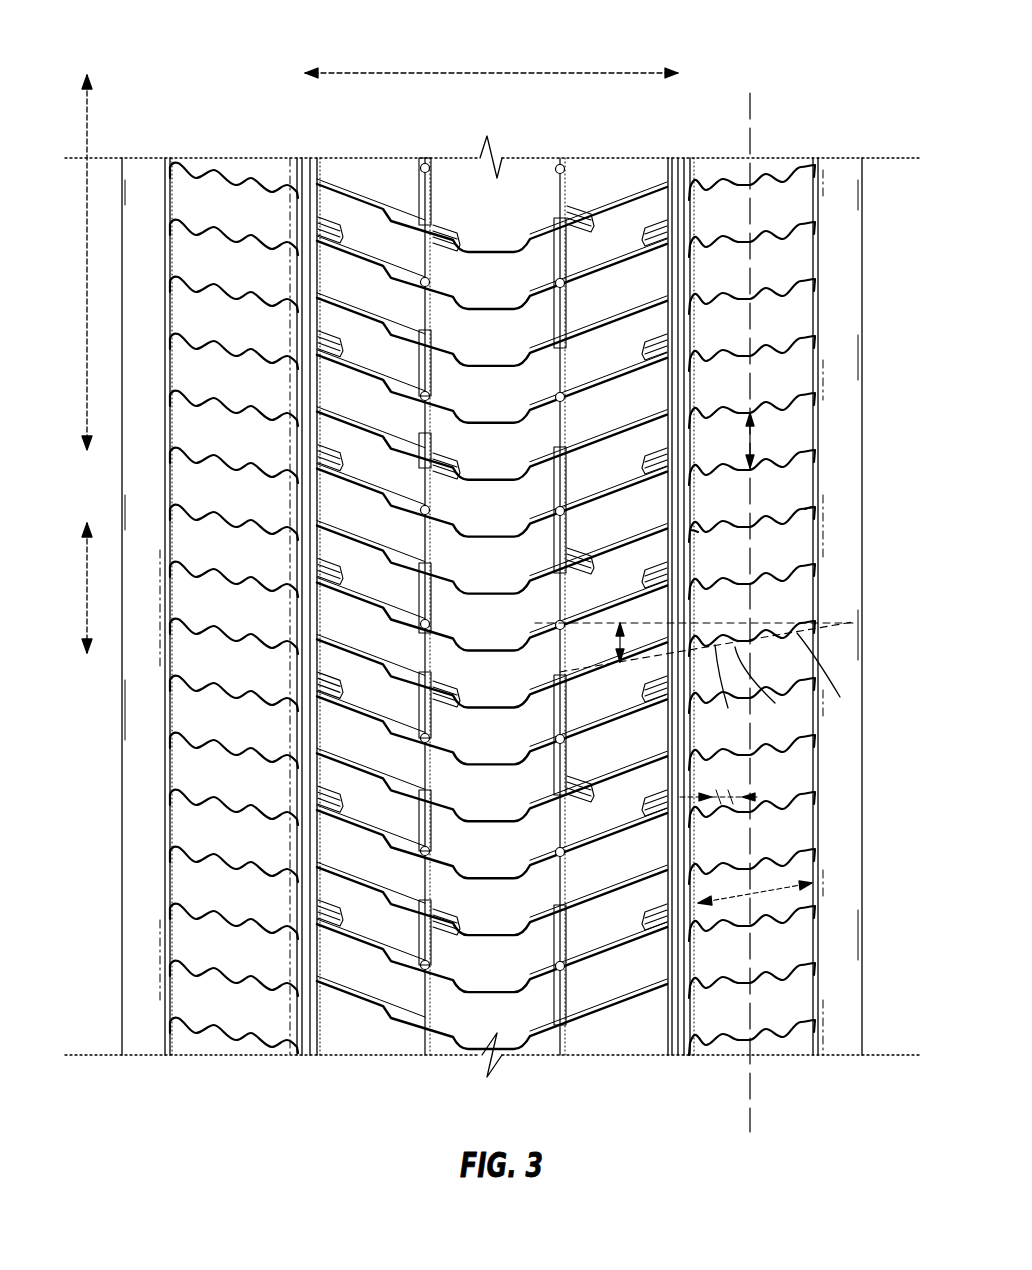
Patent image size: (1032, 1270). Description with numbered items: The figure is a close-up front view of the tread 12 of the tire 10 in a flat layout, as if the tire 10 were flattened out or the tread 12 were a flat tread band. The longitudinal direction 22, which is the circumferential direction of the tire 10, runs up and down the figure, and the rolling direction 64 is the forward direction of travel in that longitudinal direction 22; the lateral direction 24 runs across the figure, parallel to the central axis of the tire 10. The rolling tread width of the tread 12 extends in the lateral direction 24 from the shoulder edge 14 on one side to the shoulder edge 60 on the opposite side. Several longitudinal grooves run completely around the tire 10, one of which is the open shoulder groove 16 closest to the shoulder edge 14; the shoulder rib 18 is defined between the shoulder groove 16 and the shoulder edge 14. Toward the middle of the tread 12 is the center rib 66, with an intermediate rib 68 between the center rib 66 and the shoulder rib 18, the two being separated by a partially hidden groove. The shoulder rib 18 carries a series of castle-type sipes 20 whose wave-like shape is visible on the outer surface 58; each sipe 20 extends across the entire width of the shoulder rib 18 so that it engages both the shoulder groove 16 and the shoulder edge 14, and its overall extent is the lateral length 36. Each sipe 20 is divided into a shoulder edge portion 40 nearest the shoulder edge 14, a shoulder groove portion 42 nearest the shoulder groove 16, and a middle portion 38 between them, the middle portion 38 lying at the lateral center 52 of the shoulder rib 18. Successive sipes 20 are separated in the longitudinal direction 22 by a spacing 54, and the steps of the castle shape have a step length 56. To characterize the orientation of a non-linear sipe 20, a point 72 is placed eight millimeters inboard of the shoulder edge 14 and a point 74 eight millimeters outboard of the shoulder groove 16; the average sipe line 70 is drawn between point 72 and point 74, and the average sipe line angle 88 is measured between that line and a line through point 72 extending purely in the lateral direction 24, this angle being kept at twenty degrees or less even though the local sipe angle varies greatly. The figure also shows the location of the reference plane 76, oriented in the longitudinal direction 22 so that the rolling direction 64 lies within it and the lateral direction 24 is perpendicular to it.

The tire 10 is at (812, 66).
The tread 12 is at (775, 183).
The shoulder edge 14 is at (822, 378).
The shoulder groove 16 is at (687, 213).
The shoulder rib 18 is at (802, 490).
The sipes 20 is at (790, 342).
The longitudinal direction 22 is at (87, 258).
The lateral direction 24 is at (490, 73).
The lateral length 36 is at (755, 895).
The middle portion 38 is at (757, 523).
The shoulder edge portion 40 is at (800, 527).
The shoulder groove portion 42 is at (708, 537).
The lateral center 52 is at (750, 607).
The spacing 54 is at (752, 437).
The step length 56 is at (752, 797).
The outer surface 58 is at (768, 836).
The shoulder edge 60 is at (170, 880).
The rolling direction 64 is at (87, 588).
The center rib 66 is at (502, 197).
The intermediate rib 68 is at (620, 172).
The average sipe line 70 is at (740, 650).
The point 72 is at (800, 630).
The point 74 is at (723, 648).
The reference plane 76 is at (750, 1083).
The average sipe line angle 88 is at (613, 633).